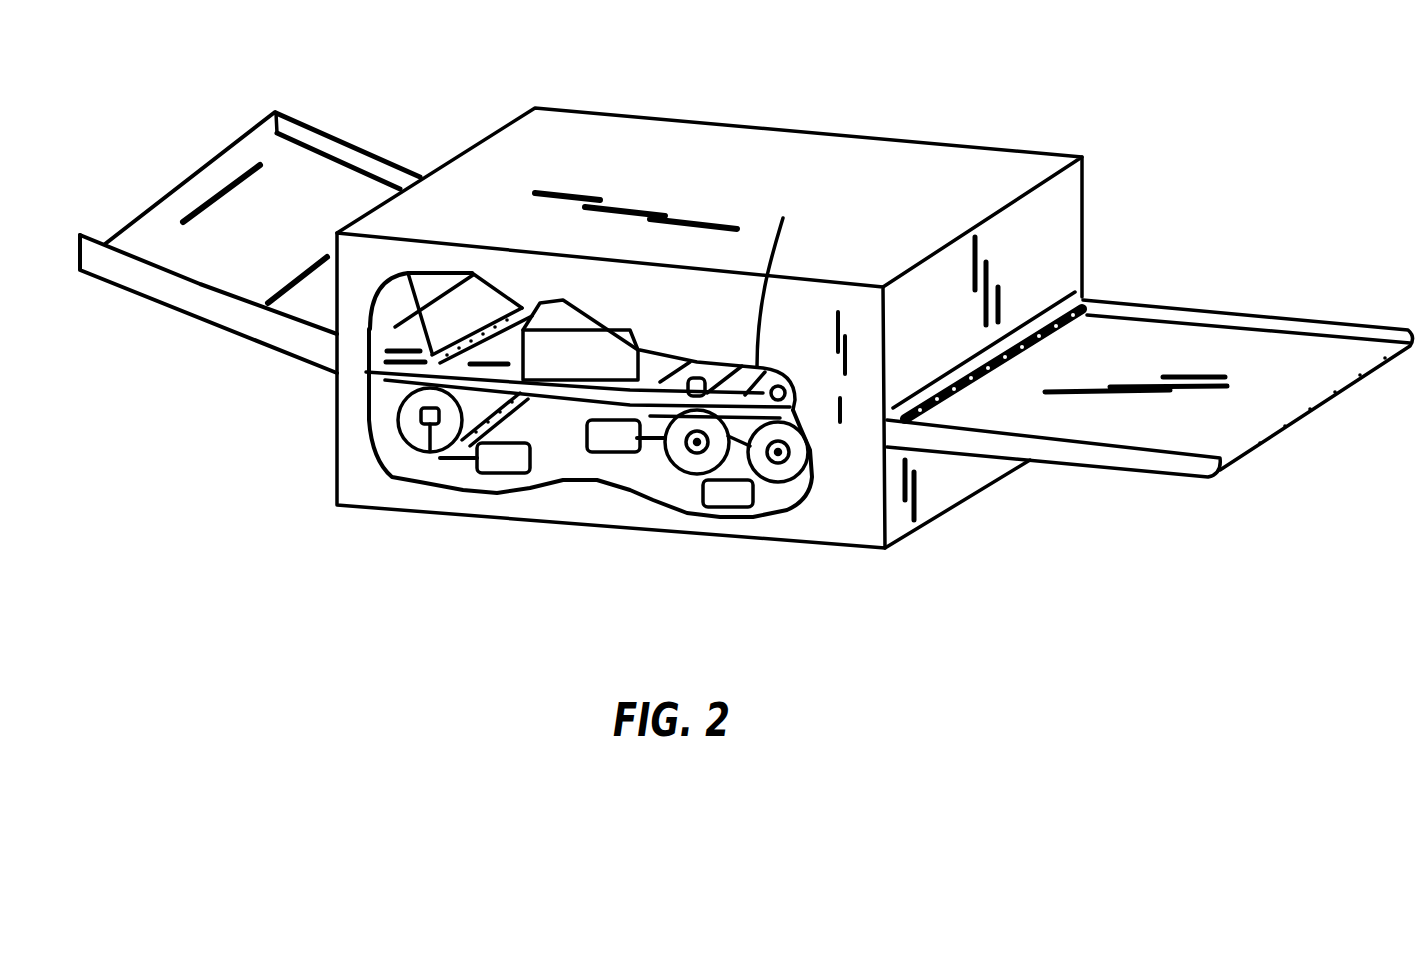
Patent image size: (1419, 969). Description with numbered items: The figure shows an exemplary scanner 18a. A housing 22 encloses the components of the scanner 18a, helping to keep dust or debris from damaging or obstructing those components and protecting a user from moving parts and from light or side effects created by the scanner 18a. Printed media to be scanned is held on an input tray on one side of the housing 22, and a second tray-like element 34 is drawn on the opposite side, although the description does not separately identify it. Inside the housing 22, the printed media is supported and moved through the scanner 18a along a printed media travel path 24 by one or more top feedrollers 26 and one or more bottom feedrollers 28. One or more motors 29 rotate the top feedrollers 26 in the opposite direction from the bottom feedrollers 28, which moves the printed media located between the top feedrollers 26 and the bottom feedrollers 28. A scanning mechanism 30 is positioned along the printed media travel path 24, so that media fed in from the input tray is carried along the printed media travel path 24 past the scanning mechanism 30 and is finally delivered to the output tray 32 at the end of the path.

The scanner 18a is at (933, 614).
The housing 22 is at (507, 153).
The printed media travel path 24 is at (368, 410).
The top feedrollers 26 is at (700, 357).
The bottom feedrollers 28 is at (418, 437).
The motors 29 is at (497, 462).
The scanning mechanism 30 is at (548, 310).
The output tray 32 is at (1126, 457).
The input tray 34 is at (150, 262).